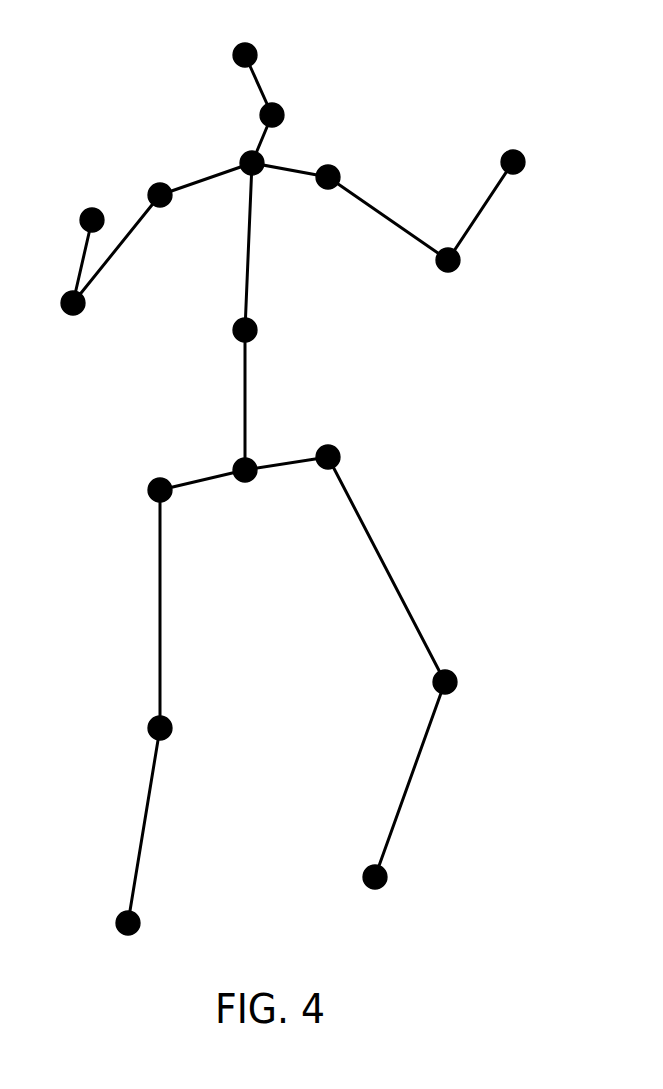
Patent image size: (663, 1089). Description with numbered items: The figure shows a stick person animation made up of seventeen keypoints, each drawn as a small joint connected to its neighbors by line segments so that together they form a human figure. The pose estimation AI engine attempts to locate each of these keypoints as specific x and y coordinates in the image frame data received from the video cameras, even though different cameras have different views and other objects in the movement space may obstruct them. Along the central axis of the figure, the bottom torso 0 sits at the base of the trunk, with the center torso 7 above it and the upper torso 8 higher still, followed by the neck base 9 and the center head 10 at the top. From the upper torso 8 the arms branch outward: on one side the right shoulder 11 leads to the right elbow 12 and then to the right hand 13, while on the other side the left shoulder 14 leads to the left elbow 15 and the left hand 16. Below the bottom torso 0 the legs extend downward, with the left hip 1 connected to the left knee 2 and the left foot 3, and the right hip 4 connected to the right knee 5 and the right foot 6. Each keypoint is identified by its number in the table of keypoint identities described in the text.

The bottom torso keypoint 0 is at (229, 440).
The left hip keypoint 1 is at (326, 430).
The left knee keypoint 2 is at (455, 657).
The left foot keypoint 3 is at (399, 876).
The right hip keypoint 4 is at (148, 462).
The right knee keypoint 5 is at (142, 711).
The right foot keypoint 6 is at (110, 908).
The center torso keypoint 7 is at (263, 314).
The upper torso keypoint 8 is at (236, 143).
The neck base keypoint 9 is at (288, 99).
The center head keypoint 10 is at (222, 33).
The right shoulder keypoint 11 is at (153, 170).
The right elbow keypoint 12 is at (60, 337).
The right hand keypoint 13 is at (69, 193).
The left shoulder keypoint 14 is at (362, 163).
The left elbow keypoint 15 is at (456, 294).
The left hand keypoint 16 is at (529, 130).